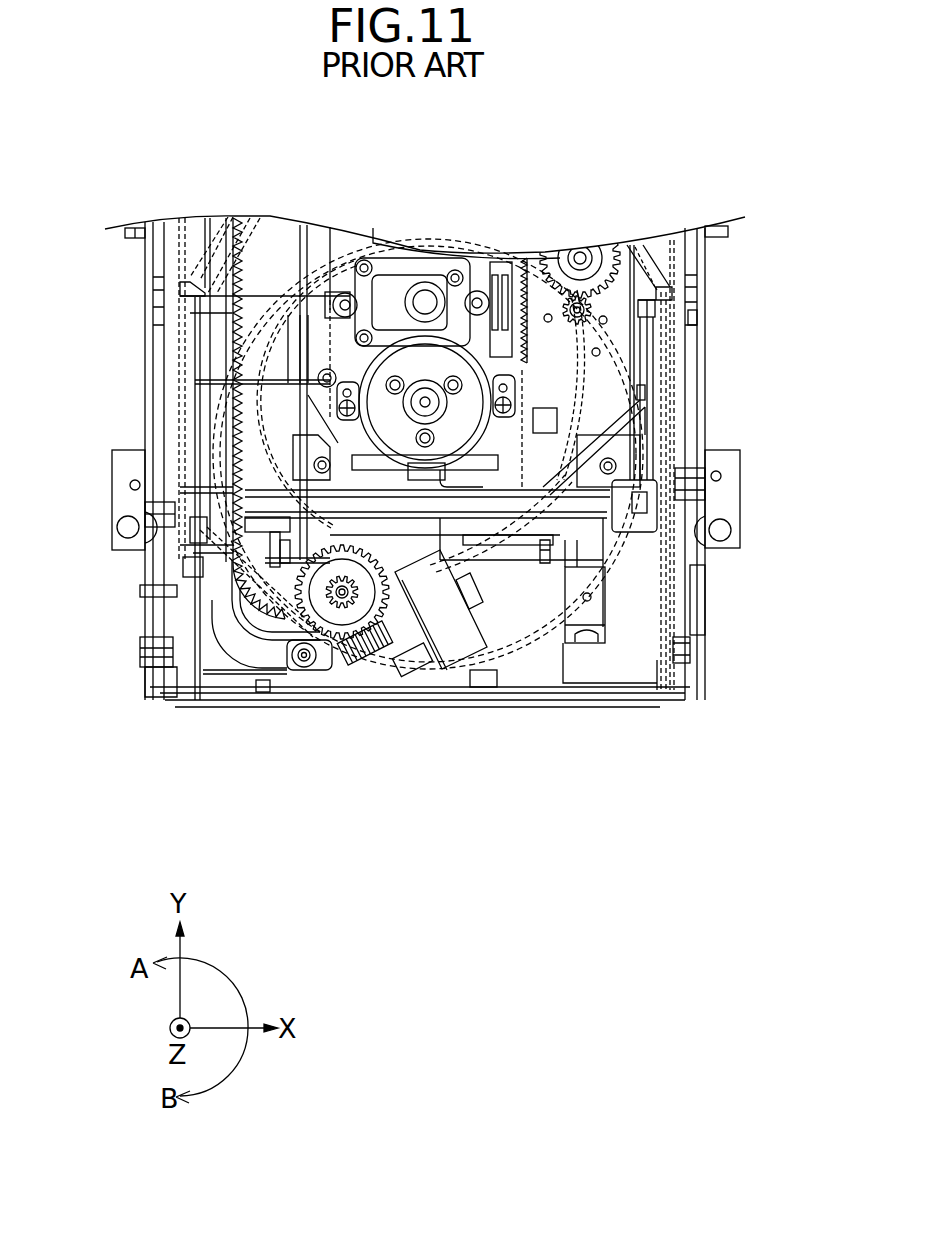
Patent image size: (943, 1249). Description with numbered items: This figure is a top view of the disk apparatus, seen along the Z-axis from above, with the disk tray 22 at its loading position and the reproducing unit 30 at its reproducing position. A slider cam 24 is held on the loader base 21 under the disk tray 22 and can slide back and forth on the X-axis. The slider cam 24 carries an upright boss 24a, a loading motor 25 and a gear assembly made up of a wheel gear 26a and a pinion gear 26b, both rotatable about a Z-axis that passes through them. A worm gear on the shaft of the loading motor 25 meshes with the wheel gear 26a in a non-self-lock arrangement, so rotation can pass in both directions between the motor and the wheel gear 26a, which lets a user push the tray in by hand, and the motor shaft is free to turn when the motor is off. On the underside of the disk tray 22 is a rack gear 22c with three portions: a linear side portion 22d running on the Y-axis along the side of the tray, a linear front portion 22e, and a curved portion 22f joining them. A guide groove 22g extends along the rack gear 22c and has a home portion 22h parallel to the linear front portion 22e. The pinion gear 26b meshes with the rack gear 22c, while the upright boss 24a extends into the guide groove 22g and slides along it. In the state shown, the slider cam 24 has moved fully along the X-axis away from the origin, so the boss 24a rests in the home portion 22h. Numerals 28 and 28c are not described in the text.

The loader base 21 is at (705, 288).
The reproducing unit 30 is at (612, 373).
The support plate 28 is at (628, 423).
The guide portion of support plate 28c is at (540, 655).
The disk tray 22 is at (223, 703).
The rack gear 22c is at (228, 503).
The linear side portion 22d is at (228, 455).
The linear front portion 22e is at (263, 700).
The curved portion 22f is at (223, 618).
The guide groove 22g is at (227, 620).
The home portion 22h is at (301, 668).
The slider cam 24 is at (550, 655).
The upright boss 24a is at (322, 672).
The loading motor 25 is at (455, 625).
The wheel gear 26a is at (418, 690).
The pinion gear 26b is at (362, 690).